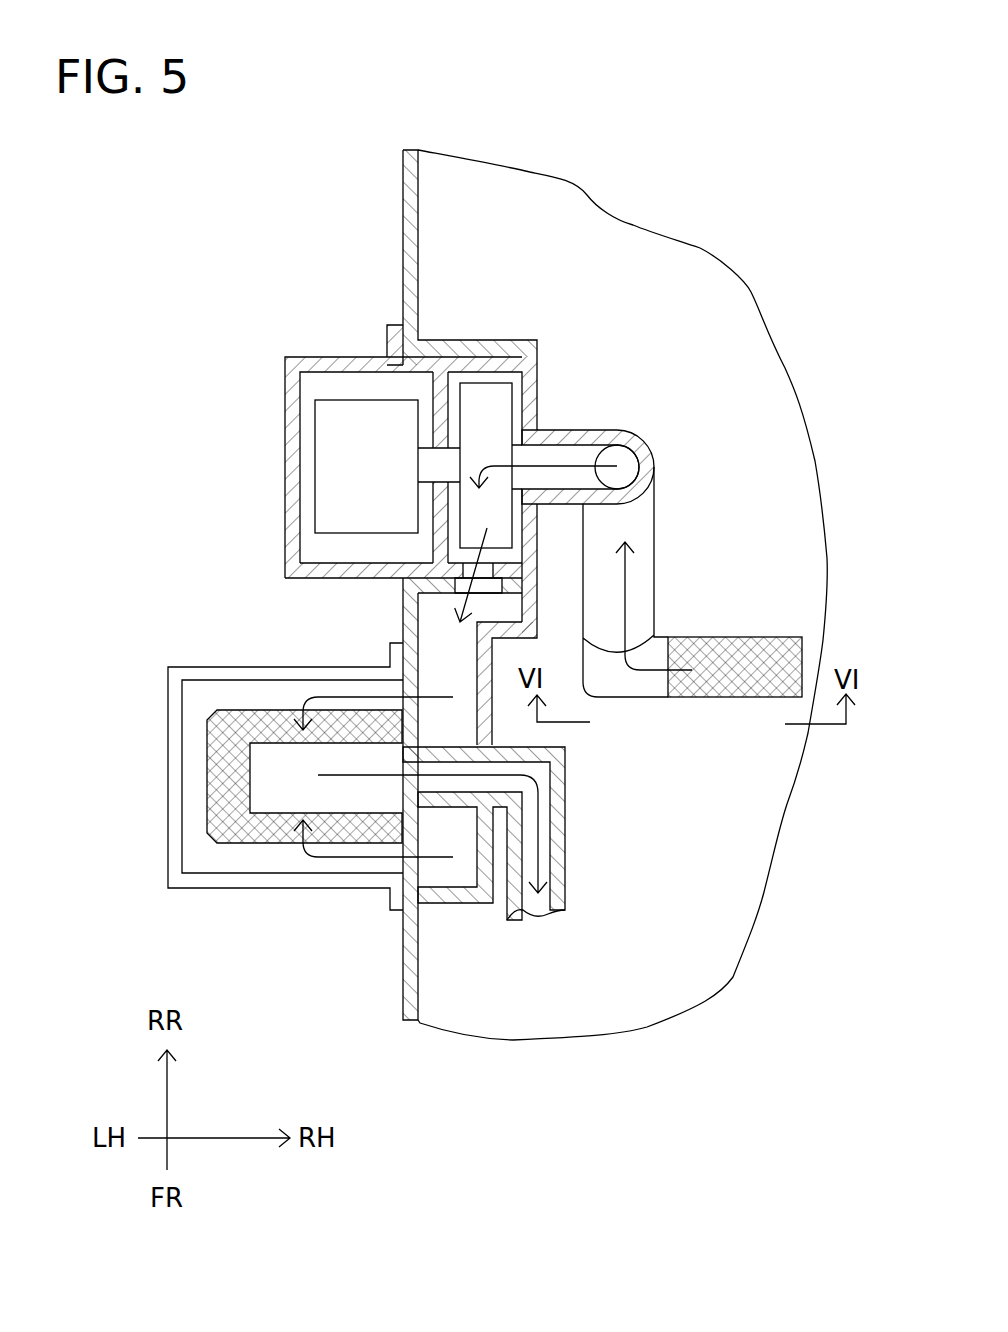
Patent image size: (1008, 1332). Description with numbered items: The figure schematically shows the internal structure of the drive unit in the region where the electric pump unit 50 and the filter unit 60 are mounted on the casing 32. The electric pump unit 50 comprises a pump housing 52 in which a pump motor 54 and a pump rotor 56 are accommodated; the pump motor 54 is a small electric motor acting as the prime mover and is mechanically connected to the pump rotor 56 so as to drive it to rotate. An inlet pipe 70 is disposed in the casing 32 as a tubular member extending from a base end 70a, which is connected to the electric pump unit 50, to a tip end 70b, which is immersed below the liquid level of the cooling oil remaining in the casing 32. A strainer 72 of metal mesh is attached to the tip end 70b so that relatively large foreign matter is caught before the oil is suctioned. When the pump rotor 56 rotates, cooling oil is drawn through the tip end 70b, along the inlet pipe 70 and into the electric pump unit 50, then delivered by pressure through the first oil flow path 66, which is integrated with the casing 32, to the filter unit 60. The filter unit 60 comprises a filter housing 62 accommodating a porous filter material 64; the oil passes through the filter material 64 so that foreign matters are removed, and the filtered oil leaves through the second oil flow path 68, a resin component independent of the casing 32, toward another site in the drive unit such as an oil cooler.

The casing 32 is at (588, 260).
The electric pump unit 50 is at (186, 356).
The pump housing 52 is at (290, 458).
The pump motor 54 is at (333, 490).
The pump rotor 56 is at (472, 512).
The filter unit 60 is at (146, 927).
The filter housing 62 is at (174, 724).
The filter material 64 is at (225, 770).
The first oil flow path 66 is at (433, 637).
The second oil flow path 68 is at (553, 836).
The inlet pipe 70 is at (645, 527).
The base end 70a is at (535, 456).
The tip end 70b is at (695, 655).
The strainer 72 is at (744, 694).